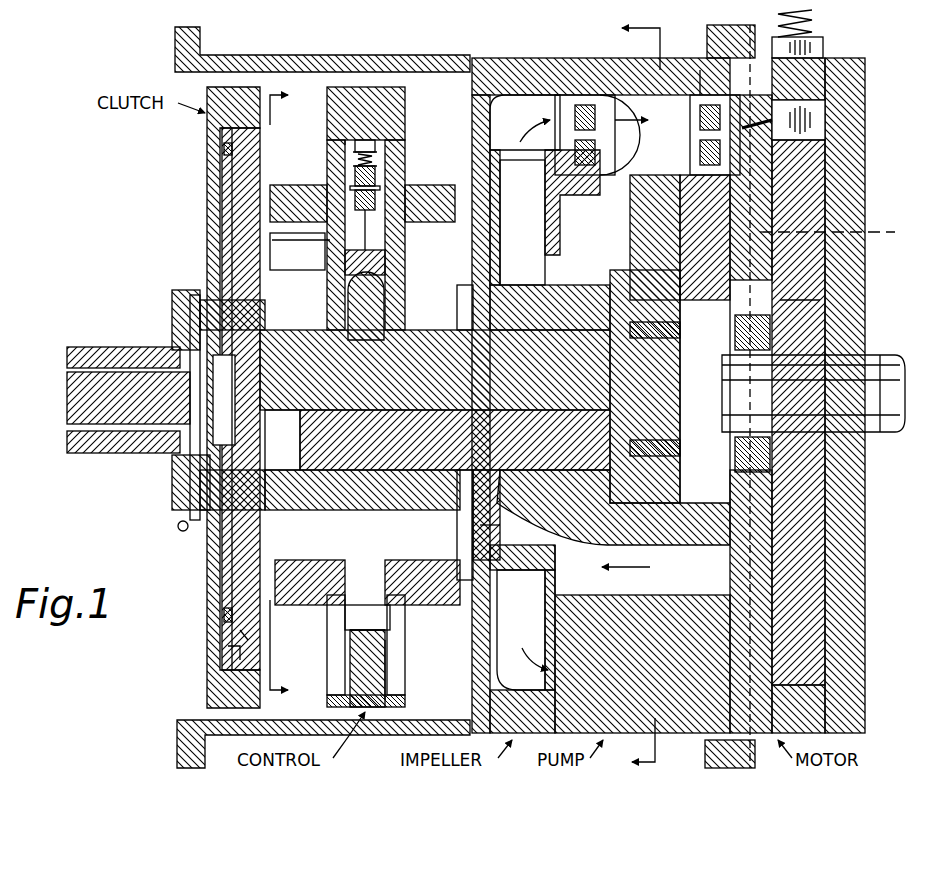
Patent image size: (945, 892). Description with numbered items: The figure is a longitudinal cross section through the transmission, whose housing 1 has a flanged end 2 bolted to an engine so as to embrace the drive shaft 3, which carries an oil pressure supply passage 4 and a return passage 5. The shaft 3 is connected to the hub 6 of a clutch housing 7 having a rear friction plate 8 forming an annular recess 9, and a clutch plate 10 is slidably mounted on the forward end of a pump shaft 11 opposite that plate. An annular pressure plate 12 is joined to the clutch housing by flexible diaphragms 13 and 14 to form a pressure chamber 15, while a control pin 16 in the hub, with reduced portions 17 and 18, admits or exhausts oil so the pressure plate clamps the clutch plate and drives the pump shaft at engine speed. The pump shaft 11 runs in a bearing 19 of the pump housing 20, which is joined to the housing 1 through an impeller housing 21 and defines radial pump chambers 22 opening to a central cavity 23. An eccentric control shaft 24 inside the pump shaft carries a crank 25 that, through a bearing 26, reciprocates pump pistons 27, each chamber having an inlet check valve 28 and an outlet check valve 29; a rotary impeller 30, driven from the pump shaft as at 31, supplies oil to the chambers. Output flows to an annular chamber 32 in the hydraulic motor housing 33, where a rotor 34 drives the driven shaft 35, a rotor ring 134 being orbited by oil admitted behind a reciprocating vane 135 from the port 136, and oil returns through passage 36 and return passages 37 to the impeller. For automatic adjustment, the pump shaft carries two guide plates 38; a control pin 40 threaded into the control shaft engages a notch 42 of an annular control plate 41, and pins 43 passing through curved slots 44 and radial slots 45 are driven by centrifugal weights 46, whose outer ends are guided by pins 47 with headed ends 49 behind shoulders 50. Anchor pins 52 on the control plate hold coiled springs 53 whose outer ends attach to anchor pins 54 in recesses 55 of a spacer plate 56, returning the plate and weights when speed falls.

The housing 1 is at (360, 84).
The flanged end 2 is at (200, 42).
The drive shaft 3 is at (103, 347).
The oil pressure supply passage 4 is at (70, 372).
The return passage 5 is at (70, 432).
The hub 6 is at (190, 500).
The clutch housing 7 is at (212, 178).
The rear friction plate 8 is at (245, 625).
The annular recess 9 is at (240, 648).
The clutch plate 10 is at (248, 636).
The pump shaft 11 is at (562, 287).
The annular pressure plate 12 is at (228, 200).
The flexible diaphragm 13 is at (224, 150).
The flexible diaphragm 14 is at (262, 312).
The pressure chamber 15 is at (226, 230).
The control pin 16 is at (178, 526).
The reduced size portion 17 is at (172, 305).
The reduced size portion 18 is at (178, 465).
The bearing 19 is at (518, 287).
The pump housing 20 is at (672, 58).
The impeller housing 21 is at (512, 58).
The radial pump chamber 22 is at (640, 95).
The central cavity 23 is at (725, 388).
The control shaft 24 is at (433, 330).
The crank 25 is at (678, 385).
The bearing 26 is at (680, 328).
The pump piston 27 is at (645, 185).
The inlet check valve 28 is at (575, 113).
The outlet check valve 29 is at (700, 130).
The rotary impeller 30 is at (548, 210).
The impeller drive 31 is at (468, 290).
The annular chamber 32 is at (790, 165).
The hydraulic motor housing 33 is at (866, 62).
The rotor 34 is at (810, 315).
The driven shaft 35 is at (880, 356).
The passage 36 is at (839, 232).
The return passage 37 is at (695, 576).
The guide plate 38 is at (328, 158).
The control pin 40 is at (386, 300).
The annular control plate 41 is at (385, 262).
The notch 42 is at (345, 287).
The pin 43 is at (440, 508).
The curved slot 44 is at (385, 528).
The radial slot 45 is at (500, 560).
The centrifugal weight 46 is at (452, 182).
The pin 47 is at (418, 605).
The headed inner end 49 is at (390, 646).
The shoulder 50 is at (388, 668).
The anchor pin 52 is at (380, 188).
The helically coiled spring 53 is at (377, 176).
The anchor pin 54 is at (377, 158).
The recess 55 is at (375, 146).
The spacer plate 56 is at (375, 95).
The rotor ring 134 is at (770, 130).
The reciprocating vane 135 is at (820, 108).
The port 136 is at (748, 25).